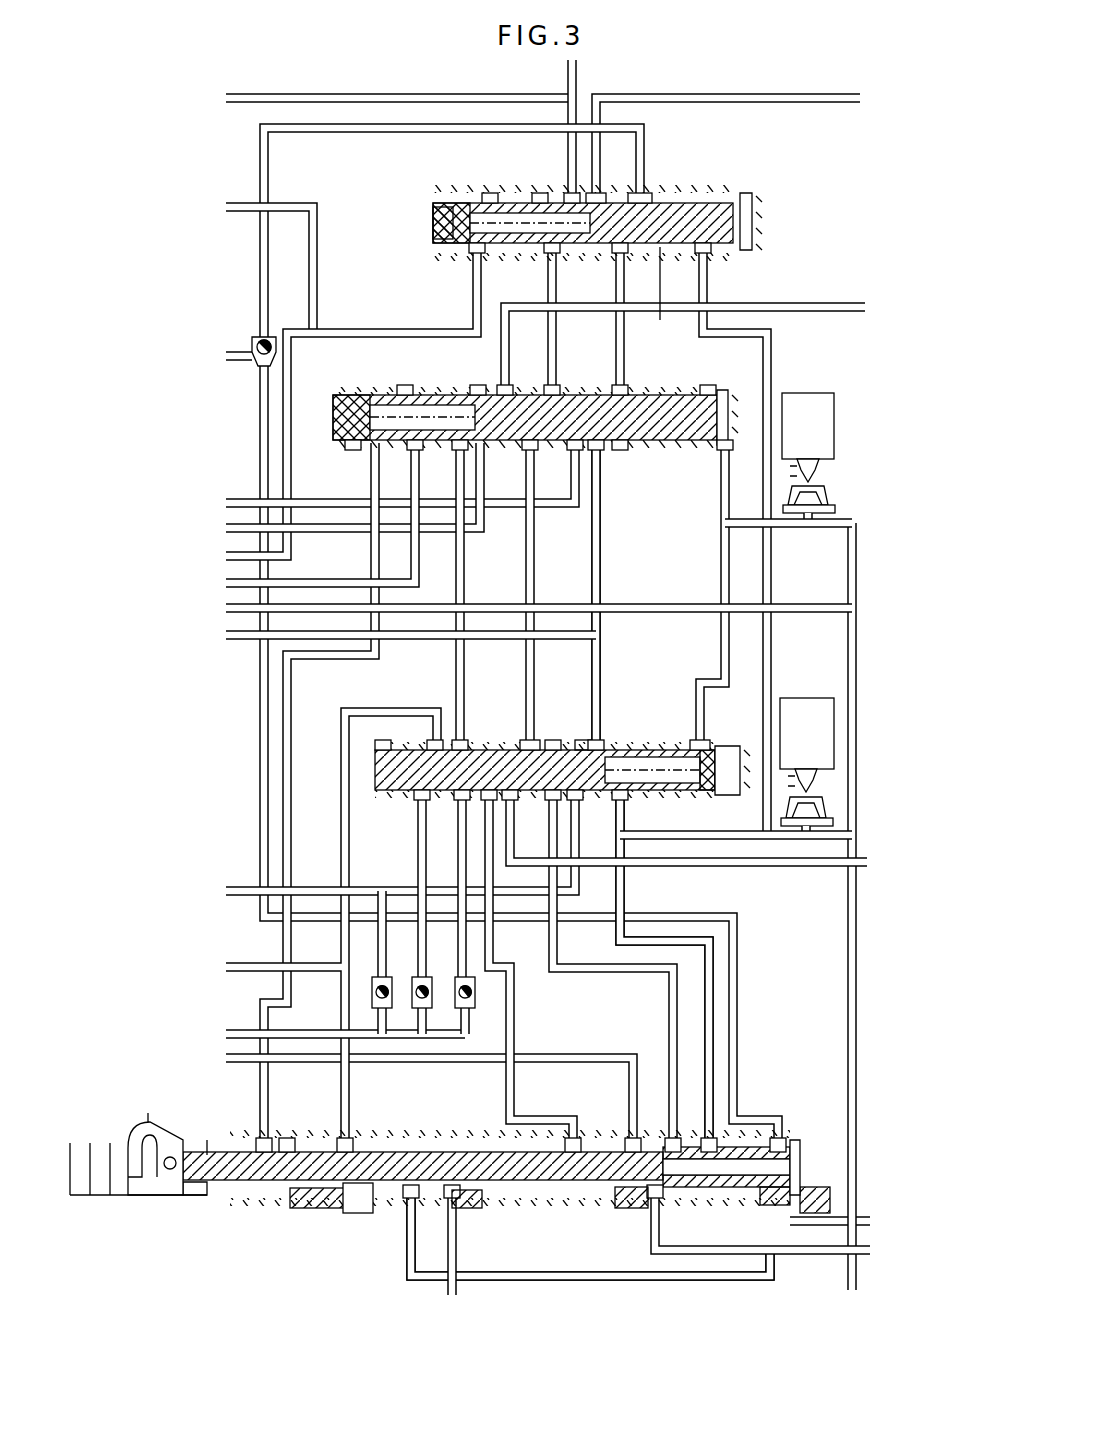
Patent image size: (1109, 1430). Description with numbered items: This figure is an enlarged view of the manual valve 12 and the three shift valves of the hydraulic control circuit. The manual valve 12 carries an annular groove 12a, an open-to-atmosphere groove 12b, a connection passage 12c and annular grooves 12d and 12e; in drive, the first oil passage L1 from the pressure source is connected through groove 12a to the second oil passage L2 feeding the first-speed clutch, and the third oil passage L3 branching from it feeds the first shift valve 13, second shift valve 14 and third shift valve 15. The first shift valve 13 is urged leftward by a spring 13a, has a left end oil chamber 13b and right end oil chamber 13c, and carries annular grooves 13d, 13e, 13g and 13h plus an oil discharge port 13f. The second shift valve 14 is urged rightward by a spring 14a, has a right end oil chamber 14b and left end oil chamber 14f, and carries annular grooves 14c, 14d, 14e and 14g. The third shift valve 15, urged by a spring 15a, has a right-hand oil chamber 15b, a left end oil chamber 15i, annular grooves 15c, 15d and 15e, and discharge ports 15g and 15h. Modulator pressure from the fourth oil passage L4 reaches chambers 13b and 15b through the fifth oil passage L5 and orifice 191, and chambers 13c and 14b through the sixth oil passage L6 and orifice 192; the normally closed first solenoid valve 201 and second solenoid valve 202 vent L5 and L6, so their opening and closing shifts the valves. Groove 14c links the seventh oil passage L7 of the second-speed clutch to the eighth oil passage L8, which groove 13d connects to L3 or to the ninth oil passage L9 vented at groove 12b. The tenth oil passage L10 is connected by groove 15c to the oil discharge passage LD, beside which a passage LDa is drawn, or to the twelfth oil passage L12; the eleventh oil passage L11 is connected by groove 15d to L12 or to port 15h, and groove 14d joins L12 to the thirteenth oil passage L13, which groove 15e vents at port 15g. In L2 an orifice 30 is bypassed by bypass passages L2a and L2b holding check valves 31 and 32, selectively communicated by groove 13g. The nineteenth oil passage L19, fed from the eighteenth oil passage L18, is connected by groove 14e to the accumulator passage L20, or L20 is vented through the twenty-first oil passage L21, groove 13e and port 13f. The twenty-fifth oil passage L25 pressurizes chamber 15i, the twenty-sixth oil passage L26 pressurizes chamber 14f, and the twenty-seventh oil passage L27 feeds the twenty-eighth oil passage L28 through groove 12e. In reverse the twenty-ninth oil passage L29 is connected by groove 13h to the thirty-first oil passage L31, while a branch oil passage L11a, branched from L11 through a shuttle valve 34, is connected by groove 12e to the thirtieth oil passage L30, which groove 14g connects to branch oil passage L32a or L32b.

The manual valve 12 is at (429, 1161).
The annular groove 12a is at (505, 1197).
The open-to-atmosphere groove 12b is at (607, 1192).
The connection passage 12c is at (290, 1210).
The annular groove 12d is at (358, 1214).
The annular groove 12e is at (757, 1197).
The No. 1 shift valve 13 is at (540, 733).
The spring 13a is at (620, 800).
The left end oil chamber 13b is at (382, 740).
The right end oil chamber 13c is at (625, 768).
The annular groove 13d is at (583, 745).
The annular groove 13e is at (550, 740).
The oil discharge port 13f is at (528, 740).
The annular groove 13g is at (435, 740).
The annular groove 13h is at (460, 740).
The No. 2 shift valve 14 is at (569, 399).
The spring 14a is at (405, 385).
The right end oil chamber 14b is at (730, 420).
The annular groove 14c is at (570, 447).
The annular groove 14d is at (620, 452).
The annular groove 14e is at (378, 452).
The left end oil chamber 14f is at (352, 448).
The annular groove 14g is at (478, 387).
The No. 3 shift valve 15 is at (605, 229).
The spring 15a is at (490, 193).
The right-hand side oil chamber 15b is at (705, 254).
The annular groove 15c is at (596, 195).
The annular groove 15d is at (640, 193).
The annular groove 15e is at (540, 193).
The oil discharge port 15g is at (552, 254).
The oil discharge port 15h is at (685, 295).
The left end oil chamber 15i is at (478, 195).
The orifice 191 is at (848, 840).
The orifice 192 is at (850, 576).
The No. 1 solenoid valve 201 is at (790, 698).
The No. 2 solenoid valve 202 is at (794, 392).
The orifice 30 is at (371, 1000).
The check valve 31 is at (476, 997).
The check valve 32 is at (421, 1009).
The shuttle valve 34 is at (257, 338).
The No. 1 oil passage L1 is at (456, 1258).
The No. 2 oil passage L2 is at (240, 963).
The No. 1 bypass passage L2a is at (466, 950).
The No. 2 bypass passage L2b is at (419, 860).
The No. 3 oil passage L3 is at (570, 933).
The No. 4 oil passage L4 is at (850, 1096).
The No. 5 oil passage L5 is at (765, 840).
The No. 6 oil passage L6 is at (722, 576).
The No. 7 oil passage L7 is at (600, 492).
The No. 8 oil passage L8 is at (600, 576).
The No. 9 oil passage L9 is at (714, 990).
The No. 10 oil passage L10 is at (751, 94).
The No. 11 oil passage L11 is at (296, 132).
The branch oil passage L11a is at (737, 1036).
The No. 12 oil passage L12 is at (616, 365).
The No. 13 oil passage L13 is at (549, 298).
The No. 18 oil passage L18 is at (410, 1266).
The No. 19 oil passage L19 is at (456, 575).
The No. 20 oil passage L20 is at (308, 270).
The No. 21 oil passage L21 is at (527, 575).
The No. 25 oil passage L25 is at (330, 330).
The No. 26 oil passage L26 is at (411, 566).
The No. 27 oil passage L27 is at (670, 1030).
The No. 28 oil passage L28 is at (690, 1281).
The No. 29 oil passage L29 is at (514, 1040).
The No. 30 oil passage L30 is at (830, 305).
The No. 31 oil passage L31 is at (640, 867).
The branch oil passage L32a is at (479, 540).
The branch oil passage L32b is at (600, 570).
The oil discharge passage LD is at (350, 93).
The oil passage LDa is at (566, 70).